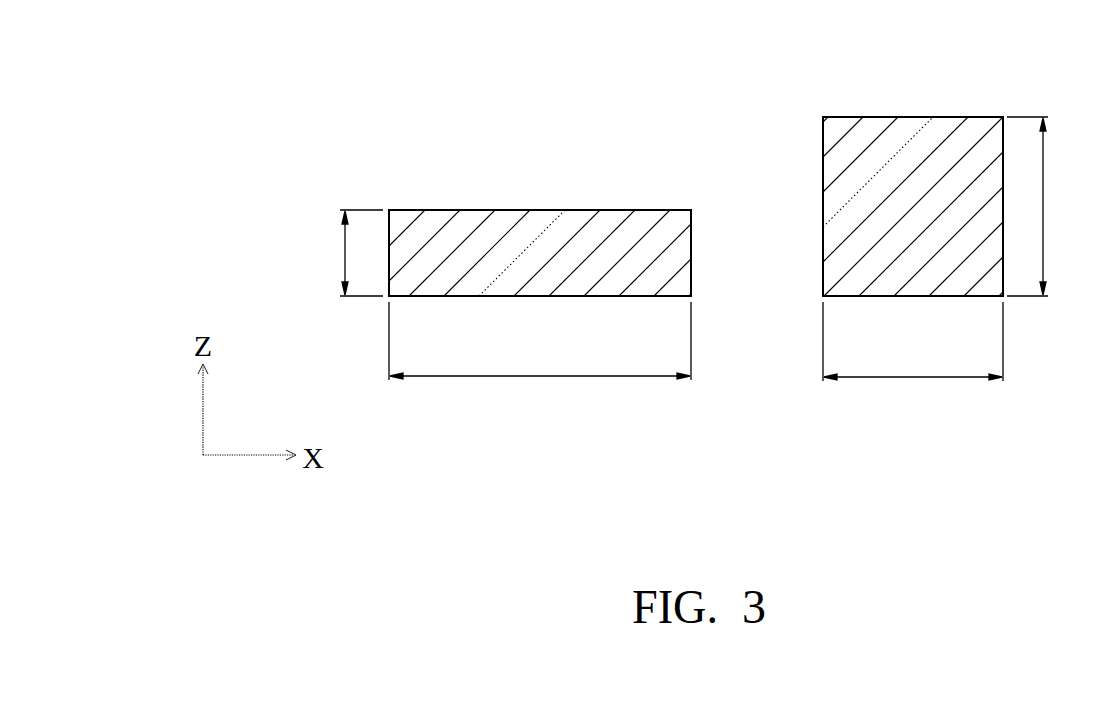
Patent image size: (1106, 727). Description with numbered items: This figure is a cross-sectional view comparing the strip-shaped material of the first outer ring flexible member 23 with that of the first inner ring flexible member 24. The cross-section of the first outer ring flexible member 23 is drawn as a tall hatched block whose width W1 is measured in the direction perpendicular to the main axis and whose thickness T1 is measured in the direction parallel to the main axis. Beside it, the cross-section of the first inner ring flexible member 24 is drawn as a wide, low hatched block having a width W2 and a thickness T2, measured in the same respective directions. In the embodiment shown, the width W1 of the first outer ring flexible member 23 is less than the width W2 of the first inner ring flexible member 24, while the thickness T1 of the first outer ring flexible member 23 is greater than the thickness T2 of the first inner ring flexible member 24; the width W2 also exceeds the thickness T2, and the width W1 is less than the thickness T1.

The first outer ring flexible member 23 is at (913, 157).
The first inner ring flexible member 24 is at (540, 250).
The thickness of the first outer ring flexible member T1 is at (1046, 206).
The thickness of the first inner ring flexible member T2 is at (343, 253).
The width of the first outer ring flexible member W1 is at (913, 341).
The width of the first inner ring flexible member W2 is at (540, 341).